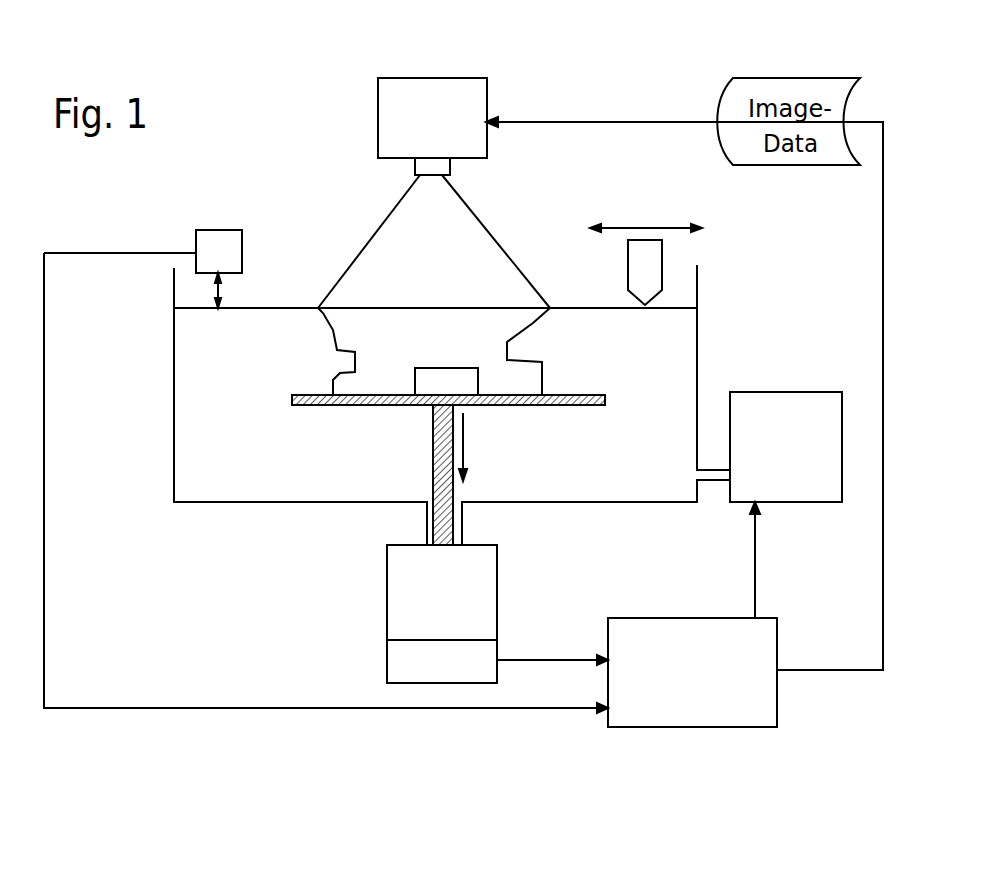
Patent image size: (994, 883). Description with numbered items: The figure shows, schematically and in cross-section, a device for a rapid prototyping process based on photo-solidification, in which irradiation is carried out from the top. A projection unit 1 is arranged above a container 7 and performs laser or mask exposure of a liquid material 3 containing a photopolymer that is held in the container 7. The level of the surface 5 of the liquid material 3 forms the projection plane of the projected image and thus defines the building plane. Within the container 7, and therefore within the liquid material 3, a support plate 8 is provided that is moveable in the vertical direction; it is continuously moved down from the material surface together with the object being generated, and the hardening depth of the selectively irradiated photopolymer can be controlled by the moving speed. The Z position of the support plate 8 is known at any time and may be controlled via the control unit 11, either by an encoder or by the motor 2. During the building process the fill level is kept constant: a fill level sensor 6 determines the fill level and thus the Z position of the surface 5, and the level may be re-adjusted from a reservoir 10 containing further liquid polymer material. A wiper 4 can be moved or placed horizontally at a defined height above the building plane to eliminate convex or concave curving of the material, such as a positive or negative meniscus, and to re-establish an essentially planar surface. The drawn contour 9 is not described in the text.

The projection unit 1 is at (460, 89).
The motor 2 is at (387, 577).
The liquid material 3 is at (277, 328).
The wiper 4 is at (662, 240).
The surface 5 is at (577, 308).
The fill level sensor 6 is at (220, 230).
The container 7 is at (308, 502).
The support plate 8 is at (562, 405).
The workpiece contour 9 is at (387, 338).
The reservoir 10 is at (788, 390).
The control unit 11 is at (688, 727).